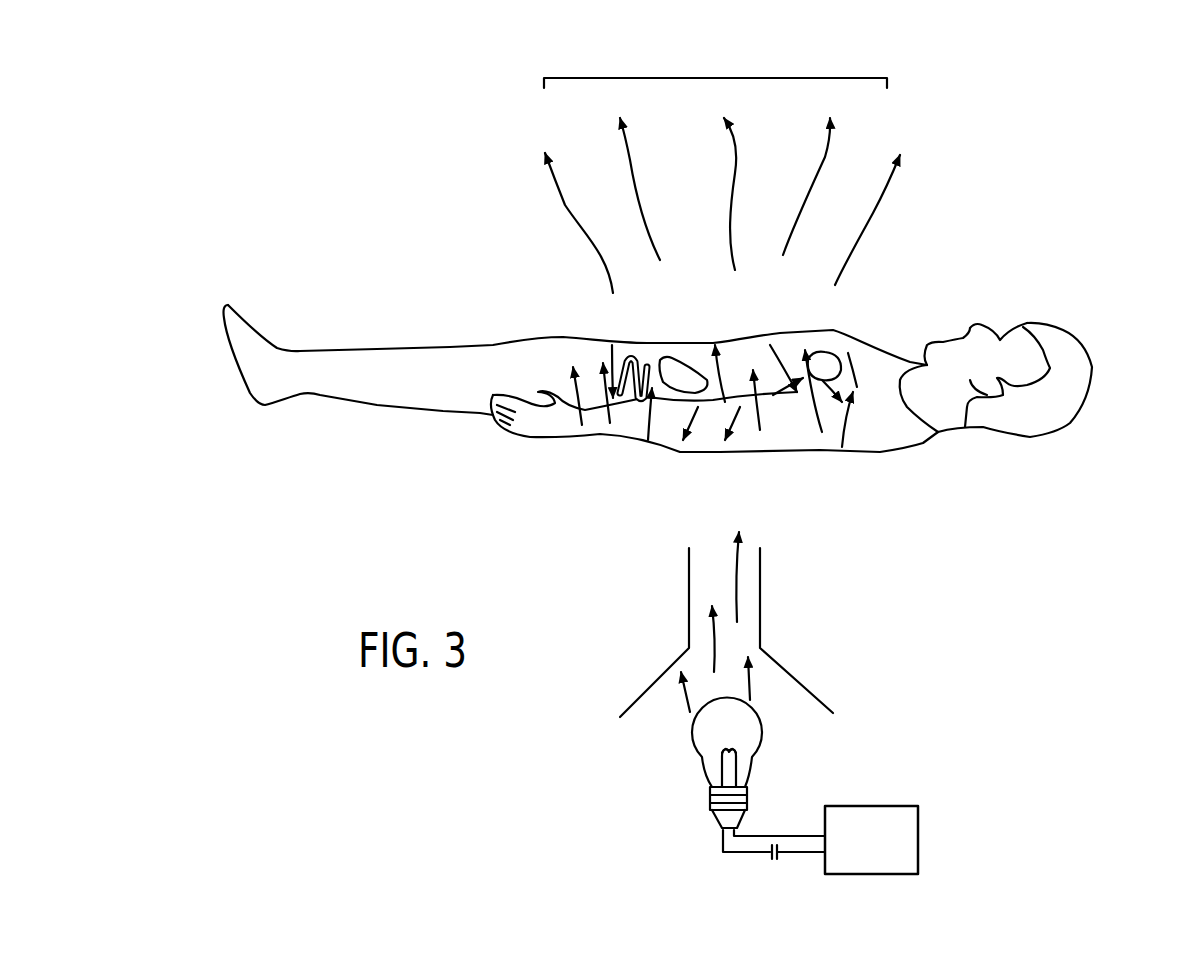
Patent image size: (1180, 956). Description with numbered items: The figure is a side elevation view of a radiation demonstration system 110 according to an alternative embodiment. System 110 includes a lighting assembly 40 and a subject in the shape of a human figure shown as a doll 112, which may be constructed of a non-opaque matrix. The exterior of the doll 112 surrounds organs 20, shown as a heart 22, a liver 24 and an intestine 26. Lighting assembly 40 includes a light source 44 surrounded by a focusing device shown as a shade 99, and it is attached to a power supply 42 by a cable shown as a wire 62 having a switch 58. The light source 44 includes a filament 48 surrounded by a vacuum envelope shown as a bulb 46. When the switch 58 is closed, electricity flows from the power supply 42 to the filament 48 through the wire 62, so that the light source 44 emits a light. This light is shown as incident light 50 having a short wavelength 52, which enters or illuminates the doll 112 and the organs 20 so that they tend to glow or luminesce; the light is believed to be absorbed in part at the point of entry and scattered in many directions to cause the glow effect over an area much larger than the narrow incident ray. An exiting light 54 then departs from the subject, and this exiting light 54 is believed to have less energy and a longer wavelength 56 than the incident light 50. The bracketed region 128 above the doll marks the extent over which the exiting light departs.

The radiation demonstration system 110 is at (353, 125).
The irradiated region 128 is at (718, 77).
The exiting light 54 is at (962, 110).
The longer wavelength 56 is at (575, 219).
The organs 20 is at (608, 325).
The doll 112 is at (1088, 347).
The intestine 26 is at (627, 360).
The liver 24 is at (677, 360).
The heart 22 is at (831, 352).
The incident light 50 is at (837, 563).
The light source 44 is at (657, 715).
The shade 99 is at (798, 675).
The short wavelength 52 is at (738, 582).
The bulb 46 is at (690, 745).
The filament 48 is at (732, 740).
The switch 58 is at (770, 856).
The wire 62 is at (800, 845).
The power supply 42 is at (918, 843).
The lighting assembly 40 is at (935, 722).